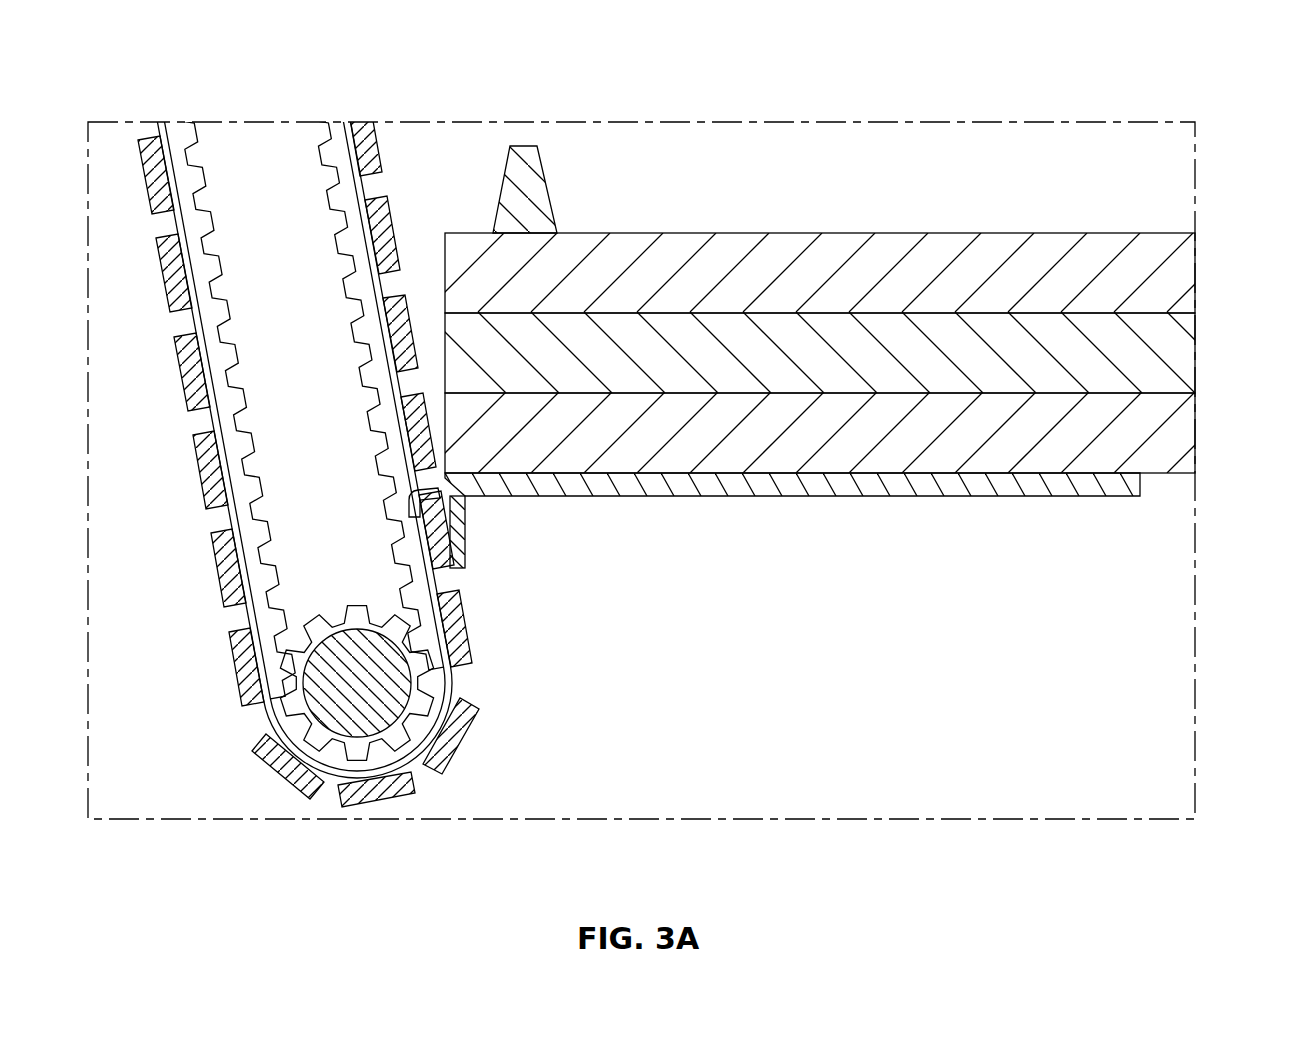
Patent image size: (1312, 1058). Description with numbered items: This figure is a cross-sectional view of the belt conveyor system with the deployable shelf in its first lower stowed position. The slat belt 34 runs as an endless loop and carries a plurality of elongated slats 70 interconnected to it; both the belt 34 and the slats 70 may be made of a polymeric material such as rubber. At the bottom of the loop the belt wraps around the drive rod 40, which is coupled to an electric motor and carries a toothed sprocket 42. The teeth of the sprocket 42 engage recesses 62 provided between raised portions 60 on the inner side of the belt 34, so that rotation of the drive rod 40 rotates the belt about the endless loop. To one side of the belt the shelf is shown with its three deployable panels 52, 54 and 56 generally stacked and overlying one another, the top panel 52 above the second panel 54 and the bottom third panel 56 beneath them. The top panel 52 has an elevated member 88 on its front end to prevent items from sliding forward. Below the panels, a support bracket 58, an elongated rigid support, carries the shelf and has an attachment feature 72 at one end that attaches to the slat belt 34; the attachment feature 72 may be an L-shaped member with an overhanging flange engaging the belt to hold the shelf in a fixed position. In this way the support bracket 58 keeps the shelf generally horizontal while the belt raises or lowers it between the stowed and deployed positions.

The slat belt 34 is at (212, 220).
The drive rod 40 is at (353, 686).
The toothed sprocket 42 is at (343, 753).
The first panel 52 is at (1180, 273).
The second panel 54 is at (1180, 356).
The third panel 56 is at (1180, 437).
The support bracket 58 is at (688, 498).
The raised portions 60 is at (335, 156).
The recesses 62 is at (178, 157).
The elongated slats 70 is at (457, 733).
The attachment feature 72 is at (423, 493).
The elevated member 88 is at (502, 165).